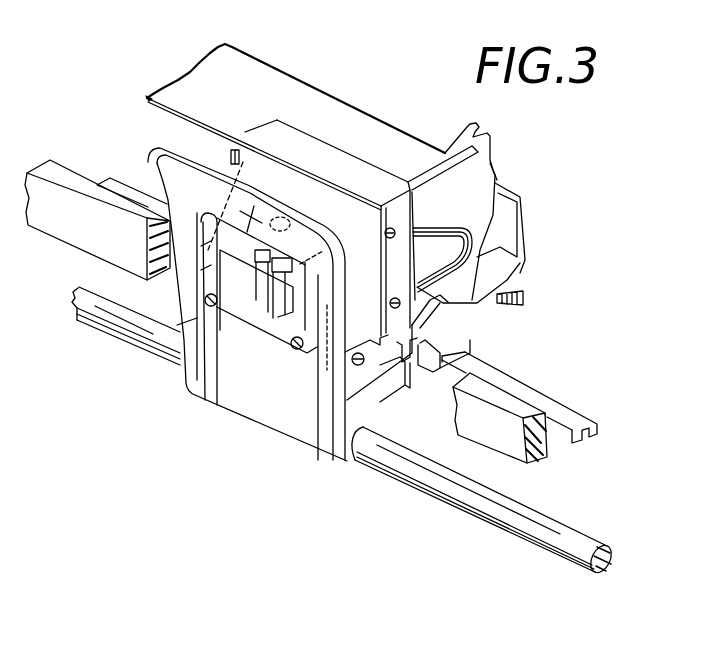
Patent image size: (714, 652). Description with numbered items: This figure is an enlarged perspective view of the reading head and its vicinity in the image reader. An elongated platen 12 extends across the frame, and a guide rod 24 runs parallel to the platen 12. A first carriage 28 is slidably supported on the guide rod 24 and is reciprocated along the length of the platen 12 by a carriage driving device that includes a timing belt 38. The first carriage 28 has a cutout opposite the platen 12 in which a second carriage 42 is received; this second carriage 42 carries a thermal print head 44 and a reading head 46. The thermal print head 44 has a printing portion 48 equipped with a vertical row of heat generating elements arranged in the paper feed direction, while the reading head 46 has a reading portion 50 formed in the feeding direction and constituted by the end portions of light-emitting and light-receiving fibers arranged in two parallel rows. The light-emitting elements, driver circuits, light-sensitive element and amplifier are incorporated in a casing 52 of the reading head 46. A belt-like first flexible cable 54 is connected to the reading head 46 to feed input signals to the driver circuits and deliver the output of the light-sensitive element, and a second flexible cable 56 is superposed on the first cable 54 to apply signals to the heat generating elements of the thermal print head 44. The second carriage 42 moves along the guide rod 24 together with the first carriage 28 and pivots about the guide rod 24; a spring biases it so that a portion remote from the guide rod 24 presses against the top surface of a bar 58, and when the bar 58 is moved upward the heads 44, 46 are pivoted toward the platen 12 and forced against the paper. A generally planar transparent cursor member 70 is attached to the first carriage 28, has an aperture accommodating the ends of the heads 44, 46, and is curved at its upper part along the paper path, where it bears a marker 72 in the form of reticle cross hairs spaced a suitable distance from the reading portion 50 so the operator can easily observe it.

The platen 12 is at (547, 440).
The guide rod 24 is at (427, 477).
The first carriage 28 is at (333, 440).
The timing belt 38 is at (524, 290).
The second carriage 42 is at (280, 403).
The thermal print head 44 is at (215, 198).
The reading head 46 is at (303, 104).
The printing portion 48 is at (272, 275).
The reading portion 50 is at (256, 272).
The casing 52 is at (312, 192).
The first flexible cable 54 is at (147, 98).
The second flexible cable 56 is at (233, 60).
The bar 58 is at (567, 410).
The cursor member 70 is at (147, 150).
The marker 72 is at (243, 208).